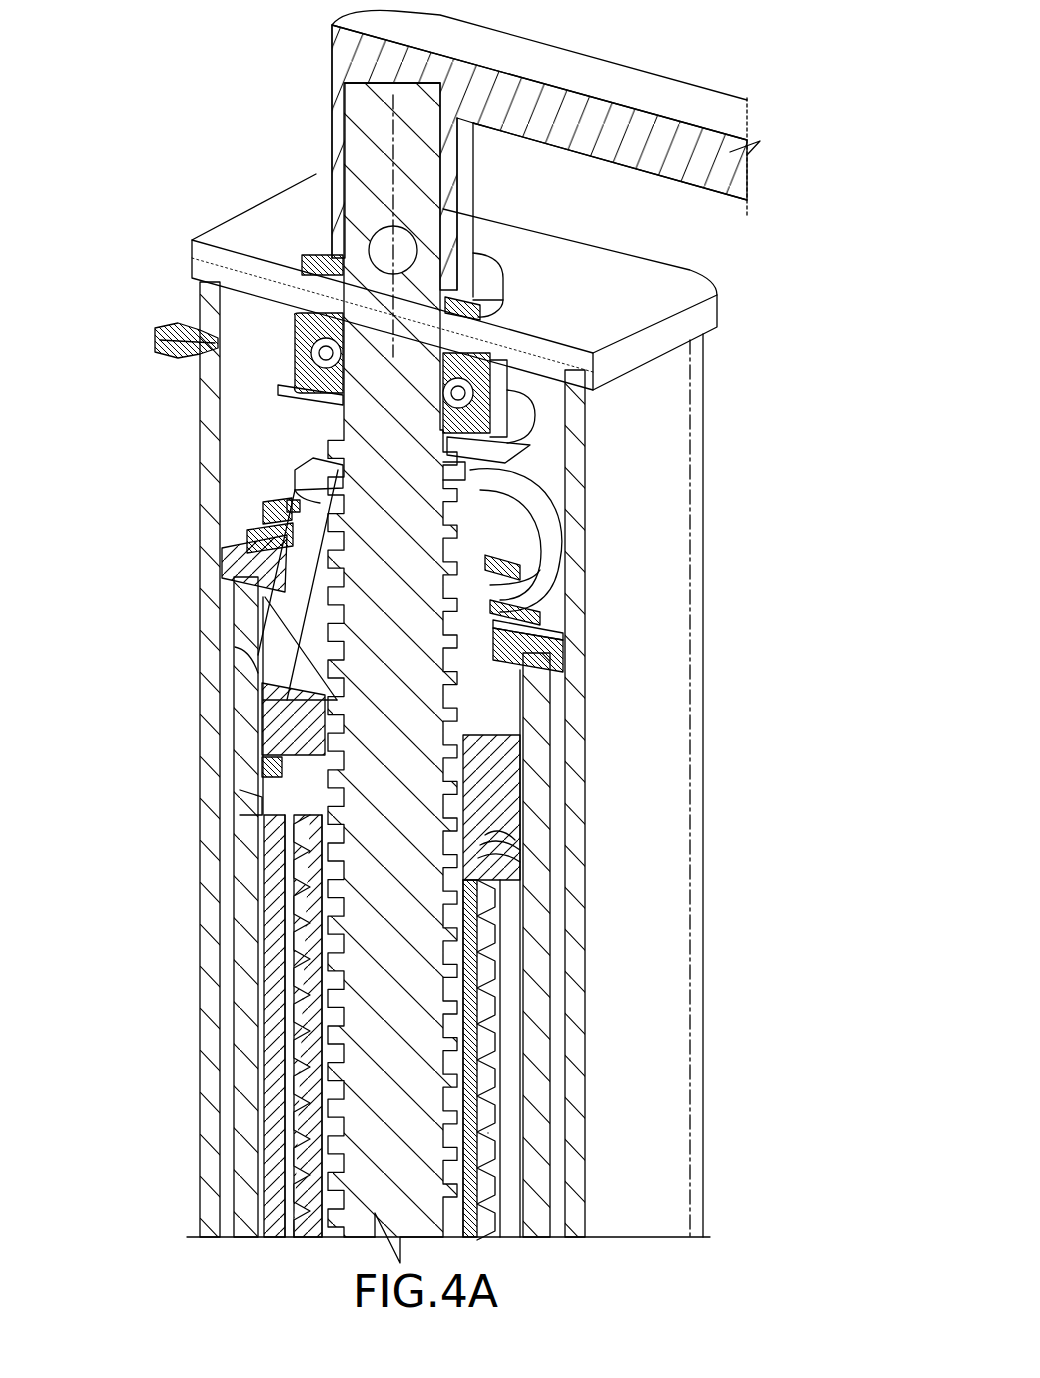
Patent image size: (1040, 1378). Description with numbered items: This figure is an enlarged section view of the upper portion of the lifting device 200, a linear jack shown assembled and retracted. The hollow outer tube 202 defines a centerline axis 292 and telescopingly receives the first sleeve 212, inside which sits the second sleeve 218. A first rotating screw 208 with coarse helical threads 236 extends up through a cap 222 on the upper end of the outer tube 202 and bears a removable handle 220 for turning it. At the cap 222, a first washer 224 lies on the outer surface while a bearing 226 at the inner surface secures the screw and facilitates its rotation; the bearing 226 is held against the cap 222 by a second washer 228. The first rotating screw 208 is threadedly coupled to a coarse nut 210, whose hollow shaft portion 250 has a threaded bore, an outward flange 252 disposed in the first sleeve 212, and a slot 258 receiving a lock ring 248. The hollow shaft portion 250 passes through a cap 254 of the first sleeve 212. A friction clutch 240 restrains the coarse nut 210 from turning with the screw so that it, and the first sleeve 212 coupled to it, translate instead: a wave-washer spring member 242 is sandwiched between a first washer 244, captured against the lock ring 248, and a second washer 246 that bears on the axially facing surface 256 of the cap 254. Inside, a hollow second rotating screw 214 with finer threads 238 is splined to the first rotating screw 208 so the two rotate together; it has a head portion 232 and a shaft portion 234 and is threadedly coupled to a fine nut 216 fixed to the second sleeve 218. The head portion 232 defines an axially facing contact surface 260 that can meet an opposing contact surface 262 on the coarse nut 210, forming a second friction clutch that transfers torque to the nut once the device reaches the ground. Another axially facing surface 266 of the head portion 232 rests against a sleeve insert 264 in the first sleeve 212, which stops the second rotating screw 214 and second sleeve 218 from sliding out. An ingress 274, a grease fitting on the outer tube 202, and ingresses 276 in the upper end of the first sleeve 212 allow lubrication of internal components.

The lifting device 200 is at (143, 110).
The outer tube 202 is at (204, 935).
The first rotating screw 208 is at (368, 1202).
The coarse nut 210 is at (287, 630).
The first sleeve 212 is at (243, 1001).
The second rotating screw 214 is at (308, 1133).
The fine nut 216 is at (288, 890).
The second sleeve 218 is at (268, 1070).
The handle 220 is at (692, 95).
The cap 222 is at (202, 258).
The first washer 224 is at (490, 287).
The bearing 226 is at (497, 402).
The second washer 228 is at (527, 445).
The head portion 232 is at (490, 788).
The shaft portion 234 is at (460, 813).
The threads 236 is at (453, 1078).
The threads 238 is at (488, 1133).
The friction clutch 240 is at (232, 515).
The spring member 242 is at (533, 588).
The first washer 244 is at (527, 562).
The second washer 246 is at (543, 617).
The lock ring 248 is at (553, 523).
The hollow shaft portion 250 is at (307, 568).
The flange 252 is at (275, 643).
The cap 254 is at (557, 653).
The axially facing surface 256 is at (560, 630).
The slot 258 is at (318, 505).
The contact surface 260 is at (483, 743).
The contact surface 262 is at (490, 787).
The sleeve insert 264 is at (262, 772).
The axially facing surface 266 is at (470, 845).
The ingress 274 is at (153, 332).
The ingresses 276 is at (247, 667).
The centerline axis 292 is at (393, 131).